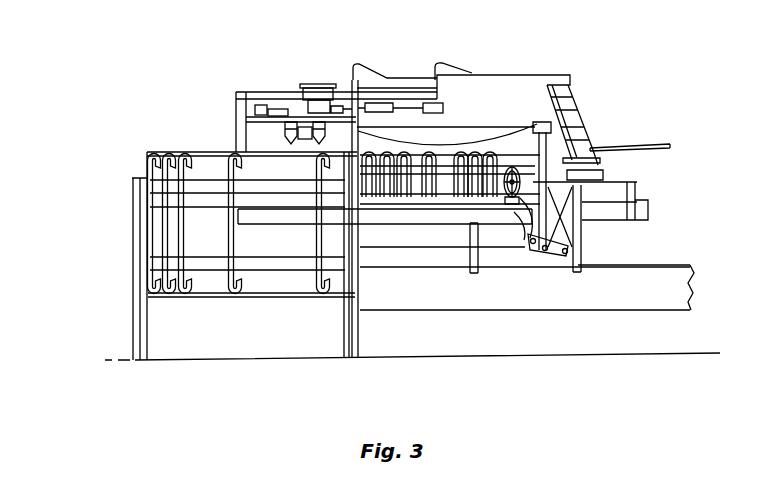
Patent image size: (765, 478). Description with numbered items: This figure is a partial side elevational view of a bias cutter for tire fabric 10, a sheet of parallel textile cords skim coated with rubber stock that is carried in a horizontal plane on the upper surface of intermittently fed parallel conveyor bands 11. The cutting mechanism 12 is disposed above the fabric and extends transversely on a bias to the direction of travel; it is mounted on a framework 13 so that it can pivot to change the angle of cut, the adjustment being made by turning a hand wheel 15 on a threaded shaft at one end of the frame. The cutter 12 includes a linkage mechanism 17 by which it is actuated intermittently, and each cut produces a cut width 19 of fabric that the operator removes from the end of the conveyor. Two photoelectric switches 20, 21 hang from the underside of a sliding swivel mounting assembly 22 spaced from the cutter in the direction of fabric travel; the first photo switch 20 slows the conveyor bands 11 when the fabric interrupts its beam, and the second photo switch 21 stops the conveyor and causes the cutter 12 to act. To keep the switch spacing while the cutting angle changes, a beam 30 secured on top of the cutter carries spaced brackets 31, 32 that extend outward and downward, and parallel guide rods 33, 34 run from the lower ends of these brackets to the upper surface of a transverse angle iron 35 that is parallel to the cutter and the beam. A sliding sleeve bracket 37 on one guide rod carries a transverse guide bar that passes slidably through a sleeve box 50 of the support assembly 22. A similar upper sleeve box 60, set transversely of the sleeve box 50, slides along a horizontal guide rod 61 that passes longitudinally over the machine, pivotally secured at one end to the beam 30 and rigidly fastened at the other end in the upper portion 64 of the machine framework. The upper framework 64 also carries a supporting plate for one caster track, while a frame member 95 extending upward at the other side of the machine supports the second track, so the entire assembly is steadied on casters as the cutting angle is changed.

The tire fabric 10 is at (640, 146).
The conveyor bands 11 is at (148, 160).
The cutting mechanism 12 is at (585, 109).
The framework 13 is at (610, 220).
The hand wheel 15 is at (517, 206).
The linkage mechanism 17 is at (548, 254).
The cut width of fabric 19 is at (160, 152).
The photoelectric switch 20 is at (318, 143).
The photoelectric switch 21 is at (285, 138).
The sliding swivel mounting assembly 22 is at (315, 82).
The beam 30 is at (518, 76).
The bracket 31 is at (363, 66).
The bracket 32 is at (444, 66).
The guide rod 33 is at (270, 106).
The guide rod 34 is at (420, 112).
The transverse angle iron 35 is at (283, 110).
The sliding sleeve bracket 37 is at (388, 104).
The sleeve box 50 is at (324, 100).
The upper sleeve box 60 is at (308, 90).
The horizontal guide rod 61 is at (256, 92).
The upper portion of machine framework 64 is at (236, 110).
The frame member 95 is at (348, 236).